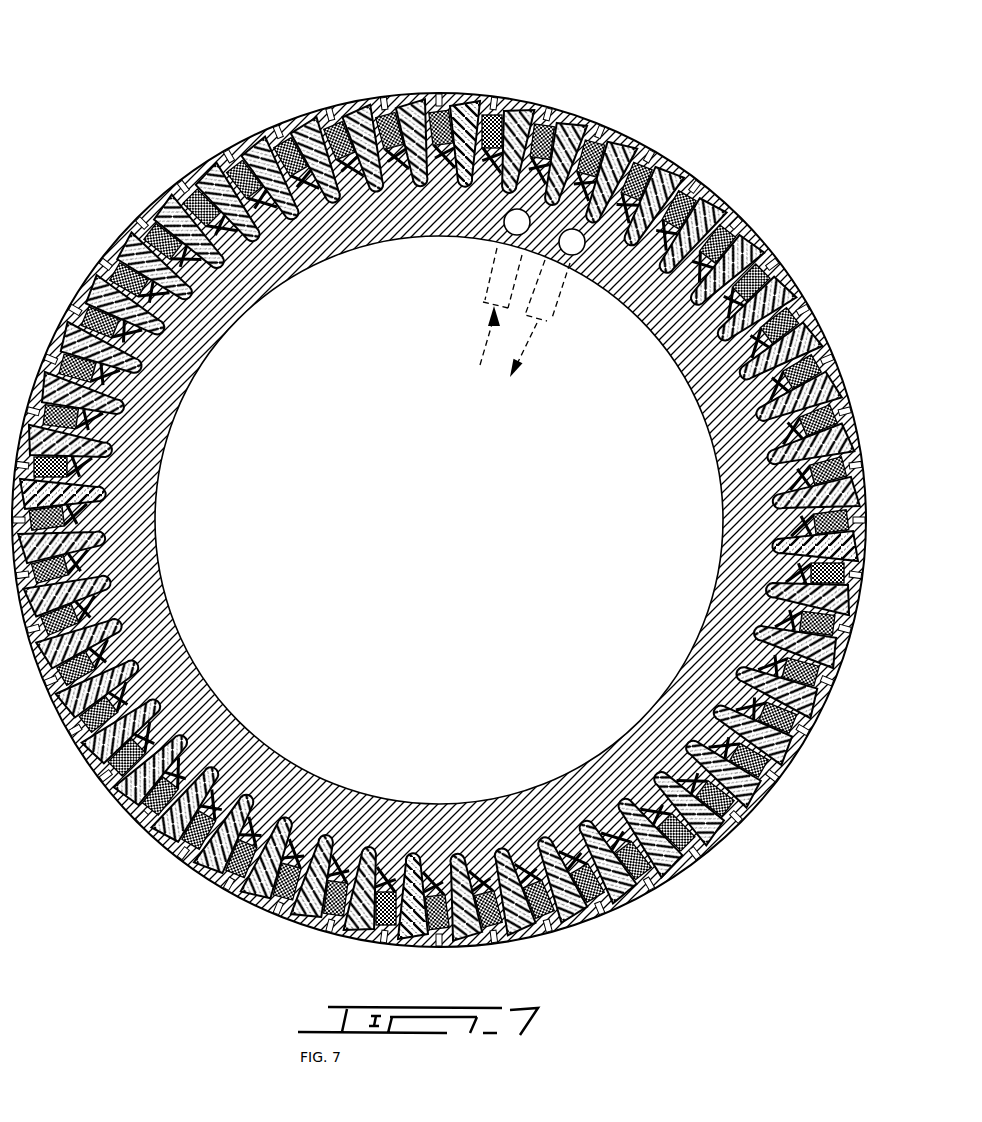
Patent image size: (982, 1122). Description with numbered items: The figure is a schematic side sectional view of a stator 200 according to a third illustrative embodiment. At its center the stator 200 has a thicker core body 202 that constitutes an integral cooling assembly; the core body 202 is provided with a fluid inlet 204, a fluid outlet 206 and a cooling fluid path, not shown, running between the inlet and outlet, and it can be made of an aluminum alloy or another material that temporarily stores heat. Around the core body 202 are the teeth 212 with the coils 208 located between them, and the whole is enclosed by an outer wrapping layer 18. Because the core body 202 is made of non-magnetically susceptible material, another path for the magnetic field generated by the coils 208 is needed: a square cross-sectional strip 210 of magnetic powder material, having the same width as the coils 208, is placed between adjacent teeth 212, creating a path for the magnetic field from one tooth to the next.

The stator 200 is at (122, 128).
The wrapping layer 18 is at (738, 230).
The core body 202 is at (224, 334).
The fluid inlet 204 is at (490, 290).
The fluid outlet 206 is at (550, 323).
The coils 208 is at (598, 147).
The square cross-sectional strip 210 is at (663, 240).
The teeth 212 is at (307, 123).